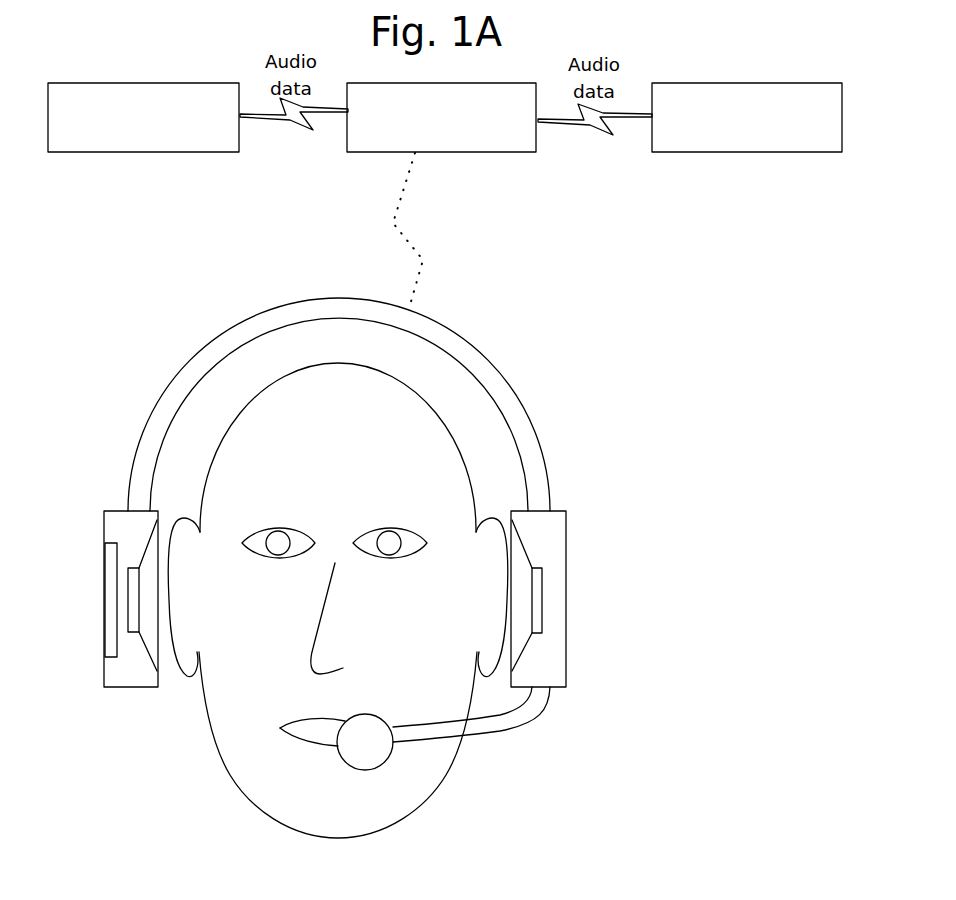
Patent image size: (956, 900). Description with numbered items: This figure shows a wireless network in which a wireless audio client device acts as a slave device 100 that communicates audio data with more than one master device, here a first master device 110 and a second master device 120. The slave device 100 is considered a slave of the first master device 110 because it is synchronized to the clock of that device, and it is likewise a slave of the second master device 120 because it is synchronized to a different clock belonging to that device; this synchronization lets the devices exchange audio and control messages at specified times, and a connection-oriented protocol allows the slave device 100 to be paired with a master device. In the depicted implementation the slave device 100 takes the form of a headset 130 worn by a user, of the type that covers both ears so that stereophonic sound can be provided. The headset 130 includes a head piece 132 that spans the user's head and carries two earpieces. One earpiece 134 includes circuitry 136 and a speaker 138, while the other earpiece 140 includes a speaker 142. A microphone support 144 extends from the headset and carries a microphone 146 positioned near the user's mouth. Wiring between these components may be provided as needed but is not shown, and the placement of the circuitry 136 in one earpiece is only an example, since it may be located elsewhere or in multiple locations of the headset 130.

The slave device 100 is at (441, 117).
The first master device 110 is at (143, 117).
The second master device 120 is at (747, 117).
The headset 130 is at (335, 520).
The head piece 132 is at (170, 383).
The earpiece 134 is at (113, 511).
The circuitry 136 is at (108, 585).
The speaker 138 is at (153, 665).
The earpiece 140 is at (560, 511).
The speaker 142 is at (542, 583).
The microphone support 144 is at (528, 723).
The microphone 146 is at (355, 771).